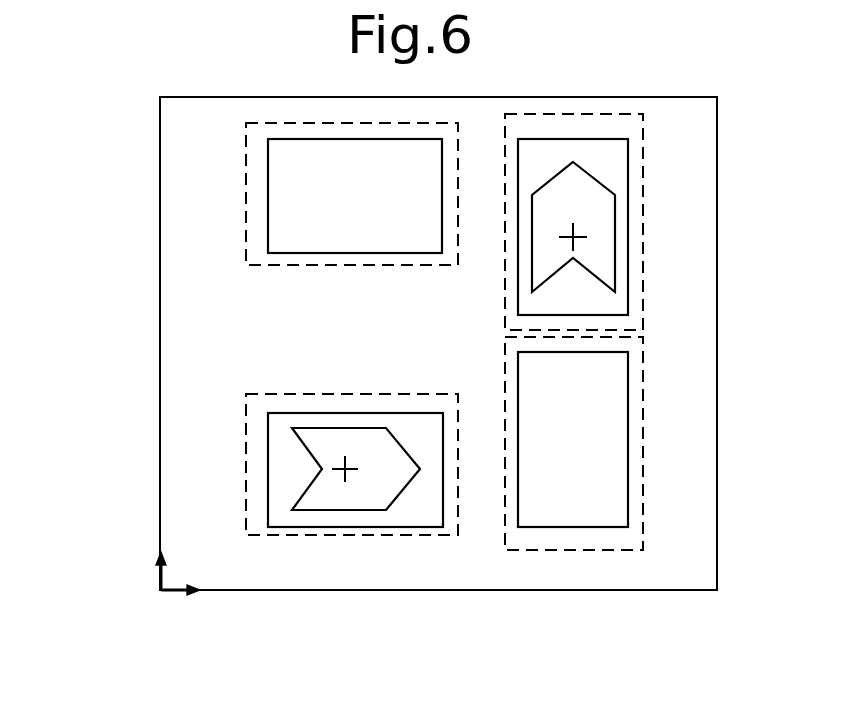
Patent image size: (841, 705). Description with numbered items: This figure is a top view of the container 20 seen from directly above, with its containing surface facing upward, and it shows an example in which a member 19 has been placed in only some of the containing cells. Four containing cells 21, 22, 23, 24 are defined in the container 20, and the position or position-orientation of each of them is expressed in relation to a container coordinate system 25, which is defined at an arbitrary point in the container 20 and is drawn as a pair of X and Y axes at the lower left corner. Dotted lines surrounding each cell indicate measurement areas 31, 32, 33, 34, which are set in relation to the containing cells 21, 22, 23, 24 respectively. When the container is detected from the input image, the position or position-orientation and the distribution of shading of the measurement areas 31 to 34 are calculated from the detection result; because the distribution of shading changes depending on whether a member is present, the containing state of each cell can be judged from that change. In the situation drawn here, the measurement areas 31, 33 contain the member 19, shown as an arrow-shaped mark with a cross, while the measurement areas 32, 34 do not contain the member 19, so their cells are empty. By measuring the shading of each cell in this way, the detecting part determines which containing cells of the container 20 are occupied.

The member 19 is at (605, 218).
The container 20 is at (145, 148).
The containing cell 21 is at (422, 526).
The containing cell 22 is at (415, 255).
The containing cell 23 is at (630, 273).
The containing cell 24 is at (630, 477).
The container coordinate system 25 is at (137, 577).
The measurement area 31 is at (268, 537).
The measurement area 32 is at (273, 266).
The measurement area 33 is at (645, 168).
The measurement area 34 is at (645, 527).